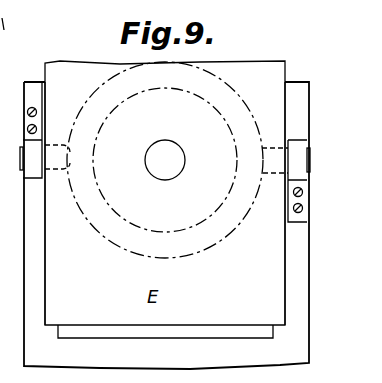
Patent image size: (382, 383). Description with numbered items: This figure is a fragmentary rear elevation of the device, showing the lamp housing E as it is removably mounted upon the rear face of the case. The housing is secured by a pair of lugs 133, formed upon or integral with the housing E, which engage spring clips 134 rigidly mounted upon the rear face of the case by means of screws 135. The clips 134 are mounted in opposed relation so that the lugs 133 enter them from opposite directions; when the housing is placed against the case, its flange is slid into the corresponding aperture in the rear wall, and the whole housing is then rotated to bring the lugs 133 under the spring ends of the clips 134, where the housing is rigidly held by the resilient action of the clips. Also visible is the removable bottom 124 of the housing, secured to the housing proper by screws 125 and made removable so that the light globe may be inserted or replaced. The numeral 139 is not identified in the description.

The removable bottom 124 is at (102, 330).
The screws 125 is at (165, 193).
The lugs 133 is at (32, 178).
The spring clips 134 is at (33, 162).
The screws 135 is at (28, 128).
The frame member 139 is at (11, 39).